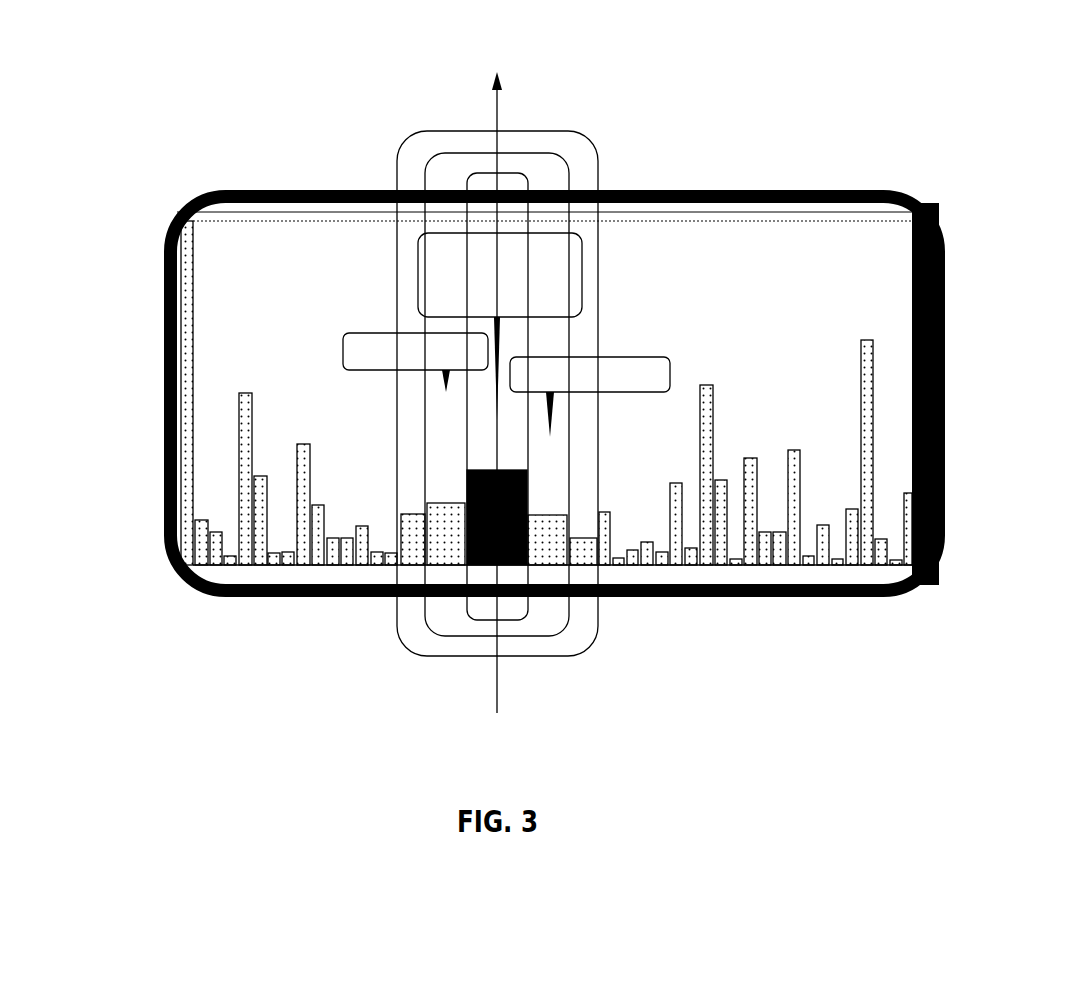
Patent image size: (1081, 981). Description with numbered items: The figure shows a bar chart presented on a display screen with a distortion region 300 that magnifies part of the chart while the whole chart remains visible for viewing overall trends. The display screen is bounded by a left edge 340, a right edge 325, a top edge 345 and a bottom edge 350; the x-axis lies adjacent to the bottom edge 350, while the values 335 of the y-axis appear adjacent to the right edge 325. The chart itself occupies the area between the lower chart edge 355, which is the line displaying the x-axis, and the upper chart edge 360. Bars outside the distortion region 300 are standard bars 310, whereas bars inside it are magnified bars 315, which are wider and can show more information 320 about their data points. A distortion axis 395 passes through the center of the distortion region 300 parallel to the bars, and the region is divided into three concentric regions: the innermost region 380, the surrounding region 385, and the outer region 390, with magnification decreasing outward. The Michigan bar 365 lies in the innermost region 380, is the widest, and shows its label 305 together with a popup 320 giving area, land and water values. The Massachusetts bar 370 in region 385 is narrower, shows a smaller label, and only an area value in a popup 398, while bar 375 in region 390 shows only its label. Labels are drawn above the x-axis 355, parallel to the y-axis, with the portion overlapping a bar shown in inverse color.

The distortion region 300 is at (598, 320).
The x-axis values 305 is at (482, 437).
The standard bar 310 is at (708, 385).
The magnified bar 315 is at (523, 470).
The popup 320 is at (417, 280).
The right edge 325 is at (945, 350).
The values 335 is at (912, 270).
The left edge 340 is at (163, 367).
The top edge 345 is at (638, 190).
The bottom edge 350 is at (310, 598).
The lower chart edge 355 is at (750, 567).
The upper chart edge 360 is at (733, 220).
The magnified bar displaying Michigan 365 is at (437, 455).
The bar displaying Massachusetts 370 is at (435, 503).
The bar 375 is at (402, 513).
The innermost region 380 is at (480, 182).
The region surrounding innermost region 385 is at (453, 163).
The outermost region 390 is at (420, 153).
The distortion axis 395 is at (498, 108).
The popup 398 is at (375, 333).